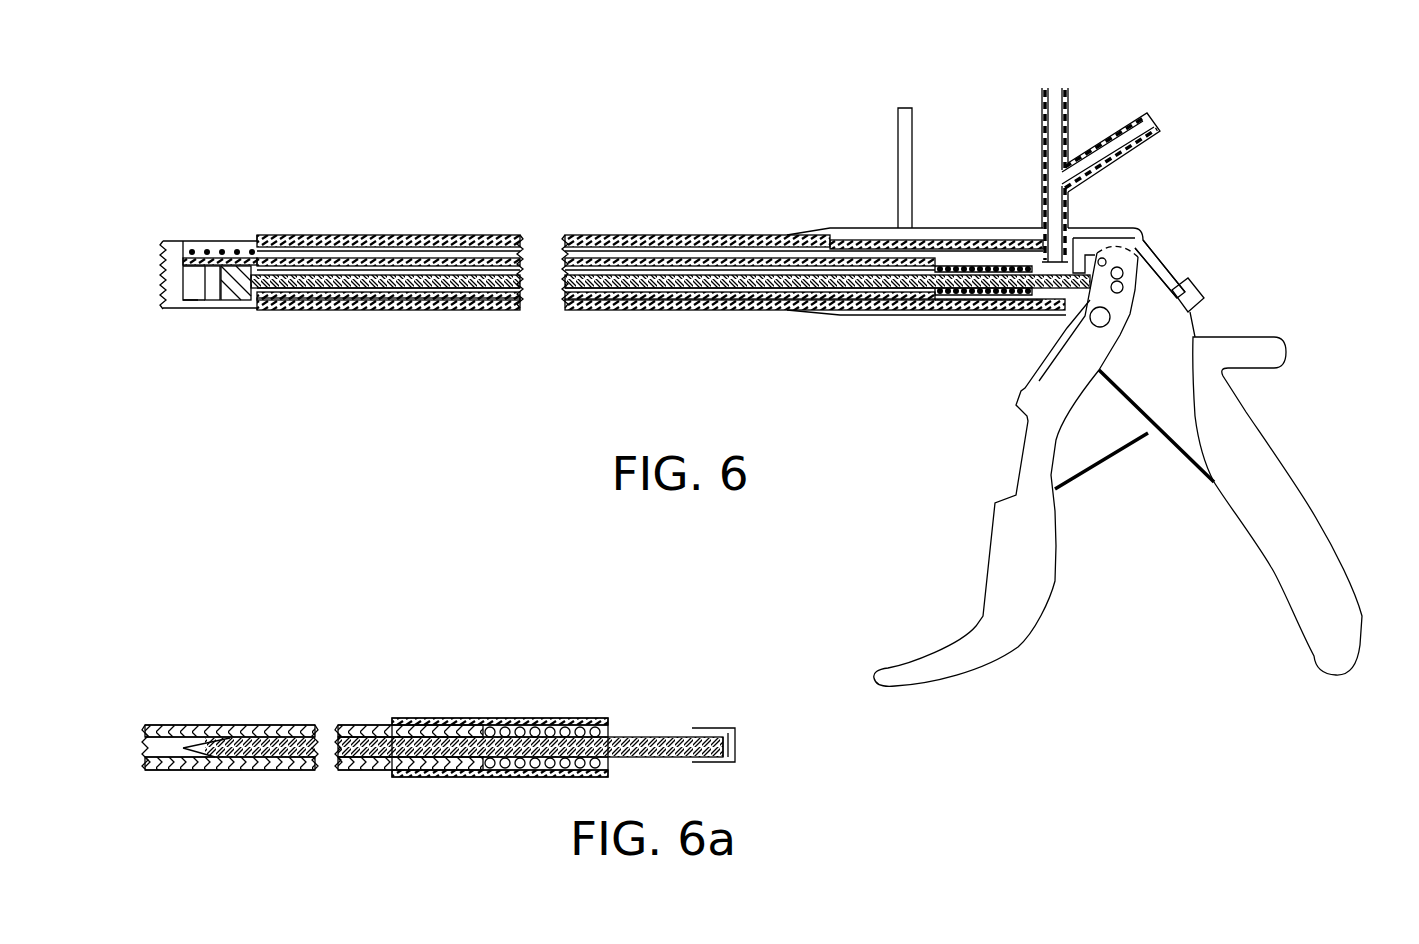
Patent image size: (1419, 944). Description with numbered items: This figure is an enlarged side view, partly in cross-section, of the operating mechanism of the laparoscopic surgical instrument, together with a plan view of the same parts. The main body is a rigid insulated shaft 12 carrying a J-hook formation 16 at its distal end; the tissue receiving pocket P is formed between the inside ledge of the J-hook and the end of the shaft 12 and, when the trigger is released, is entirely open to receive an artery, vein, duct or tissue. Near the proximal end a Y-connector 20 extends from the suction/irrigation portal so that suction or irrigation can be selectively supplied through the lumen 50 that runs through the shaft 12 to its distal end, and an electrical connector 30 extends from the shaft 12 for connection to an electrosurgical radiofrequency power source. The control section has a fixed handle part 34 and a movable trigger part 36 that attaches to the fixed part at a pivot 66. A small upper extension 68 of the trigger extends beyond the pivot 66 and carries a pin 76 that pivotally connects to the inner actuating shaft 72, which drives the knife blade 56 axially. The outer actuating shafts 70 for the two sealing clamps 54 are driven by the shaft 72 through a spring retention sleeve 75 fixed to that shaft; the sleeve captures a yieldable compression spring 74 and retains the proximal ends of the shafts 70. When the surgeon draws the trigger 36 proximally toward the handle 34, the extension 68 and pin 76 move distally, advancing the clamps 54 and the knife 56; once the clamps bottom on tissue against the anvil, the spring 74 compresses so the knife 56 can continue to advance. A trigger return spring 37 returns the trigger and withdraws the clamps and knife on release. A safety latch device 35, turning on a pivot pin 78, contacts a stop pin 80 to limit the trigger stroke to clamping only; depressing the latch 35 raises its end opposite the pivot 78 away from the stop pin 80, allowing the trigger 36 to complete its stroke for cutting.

In FIG. 6, the rigid insulated shaft 12 is at (293, 235).
In FIG. 6, the J-hook formation 16 is at (170, 250).
In FIG. 6, the tissue receiving pocket P is at (197, 283).
In FIG. 6, the Y-connector 20 is at (1053, 206).
In FIG. 6, the electrical connector 30 is at (912, 150).
In FIG. 6, the fixed handle part 34 is at (1300, 595).
In FIG. 6, the safety latch device 35 is at (1197, 297).
In FIG. 6, the movable trigger part 36 is at (967, 658).
In FIG. 6, the trigger return spring 37 is at (1102, 460).
In FIG. 6, the lumen 50 is at (397, 253).
In FIG. 6, the sealing clamp 54 is at (212, 297).
In FIG. 6a, the sealing clamp 54 is at (170, 725).
In FIG. 6, the knife blade 56 is at (233, 297).
In FIG. 6a, the knife blade 56 is at (247, 737).
In FIG. 6, the pivot 66 is at (1021, 389).
In FIG. 6, the upper extension 68 is at (1143, 255).
In FIG. 6, the actuating shaft for sealing clamp 70 is at (673, 293).
In FIG. 6a, the actuating shaft for sealing clamp 70 is at (360, 725).
In FIG. 6, the actuating shaft for knife blade 72 is at (763, 285).
In FIG. 6a, the actuating shaft for knife blade 72 is at (648, 735).
In FIG. 6, the compression spring 74 is at (935, 295).
In FIG. 6a, the compression spring 74 is at (538, 730).
In FIG. 6, the spring retention sleeve 75 is at (865, 300).
In FIG. 6a, the spring retention sleeve 75 is at (443, 718).
In FIG. 6, the pin 76 is at (1127, 287).
In FIG. 6, the pivot pin 78 is at (1153, 277).
In FIG. 6, the stop pin 80 is at (1098, 313).